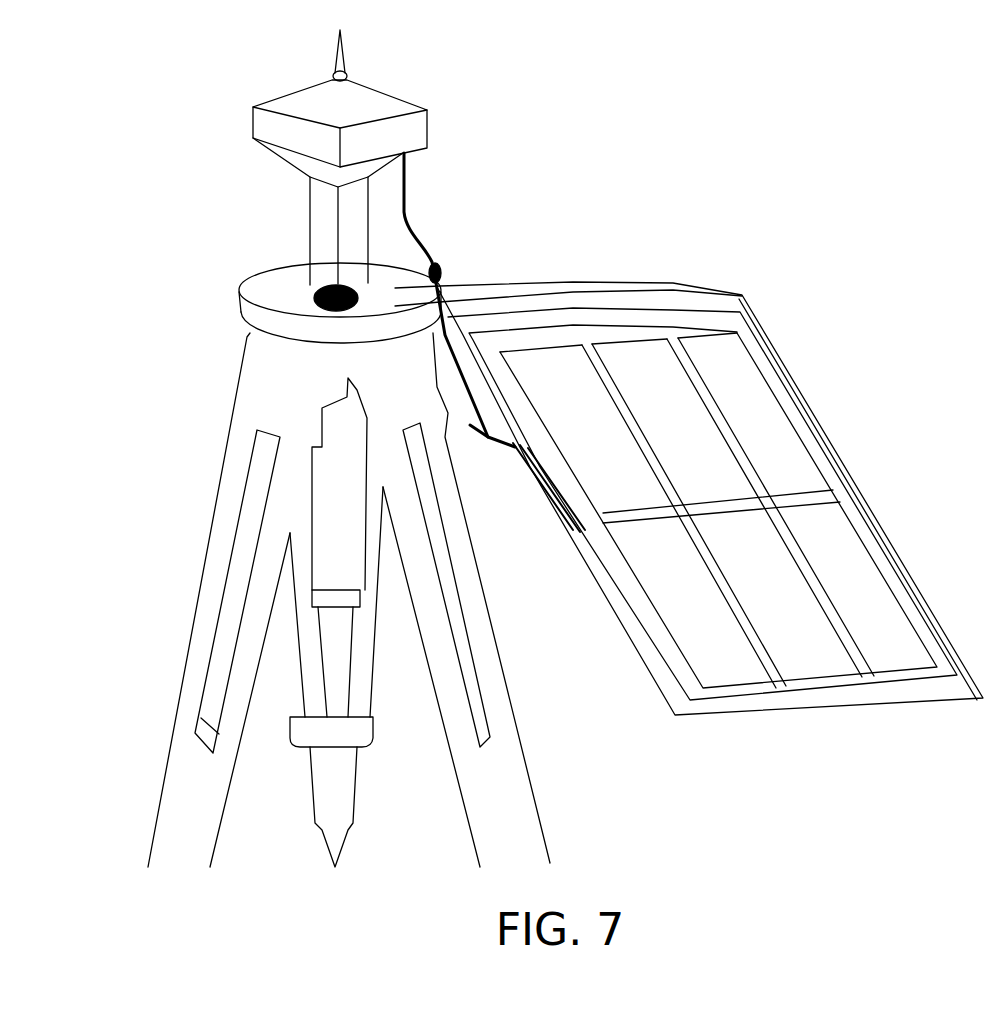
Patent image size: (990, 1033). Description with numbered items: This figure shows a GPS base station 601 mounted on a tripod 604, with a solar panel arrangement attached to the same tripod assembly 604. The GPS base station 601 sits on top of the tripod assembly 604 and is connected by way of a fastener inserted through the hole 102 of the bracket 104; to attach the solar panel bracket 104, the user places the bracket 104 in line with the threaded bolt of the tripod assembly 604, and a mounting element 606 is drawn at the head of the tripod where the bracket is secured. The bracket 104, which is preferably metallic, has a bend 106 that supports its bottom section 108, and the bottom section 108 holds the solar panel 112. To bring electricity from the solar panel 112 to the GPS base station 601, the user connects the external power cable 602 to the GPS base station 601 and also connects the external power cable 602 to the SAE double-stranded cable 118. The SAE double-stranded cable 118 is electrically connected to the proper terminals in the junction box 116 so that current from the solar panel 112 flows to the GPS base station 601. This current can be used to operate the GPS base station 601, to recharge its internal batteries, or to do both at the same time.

The GPS base station 601 is at (428, 115).
The external power cable 602 is at (435, 245).
The tripod 604 is at (228, 498).
The mounting bolt 606 is at (315, 297).
The hole 102 is at (307, 282).
The bracket 104 is at (573, 290).
The bend 106 is at (702, 486).
The bottom section 108 is at (731, 498).
The solar panel 112 is at (870, 550).
The junction box 116 is at (577, 521).
The SAE double-stranded cable 118 is at (486, 438).